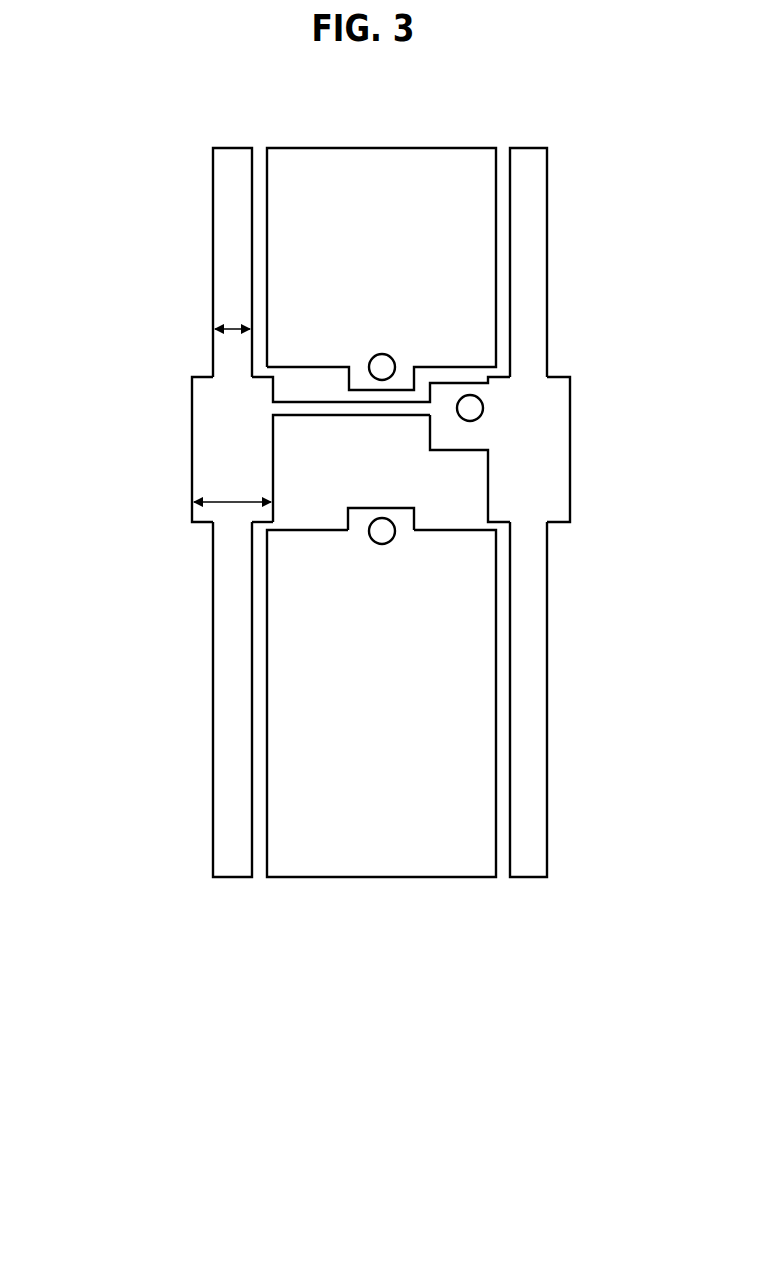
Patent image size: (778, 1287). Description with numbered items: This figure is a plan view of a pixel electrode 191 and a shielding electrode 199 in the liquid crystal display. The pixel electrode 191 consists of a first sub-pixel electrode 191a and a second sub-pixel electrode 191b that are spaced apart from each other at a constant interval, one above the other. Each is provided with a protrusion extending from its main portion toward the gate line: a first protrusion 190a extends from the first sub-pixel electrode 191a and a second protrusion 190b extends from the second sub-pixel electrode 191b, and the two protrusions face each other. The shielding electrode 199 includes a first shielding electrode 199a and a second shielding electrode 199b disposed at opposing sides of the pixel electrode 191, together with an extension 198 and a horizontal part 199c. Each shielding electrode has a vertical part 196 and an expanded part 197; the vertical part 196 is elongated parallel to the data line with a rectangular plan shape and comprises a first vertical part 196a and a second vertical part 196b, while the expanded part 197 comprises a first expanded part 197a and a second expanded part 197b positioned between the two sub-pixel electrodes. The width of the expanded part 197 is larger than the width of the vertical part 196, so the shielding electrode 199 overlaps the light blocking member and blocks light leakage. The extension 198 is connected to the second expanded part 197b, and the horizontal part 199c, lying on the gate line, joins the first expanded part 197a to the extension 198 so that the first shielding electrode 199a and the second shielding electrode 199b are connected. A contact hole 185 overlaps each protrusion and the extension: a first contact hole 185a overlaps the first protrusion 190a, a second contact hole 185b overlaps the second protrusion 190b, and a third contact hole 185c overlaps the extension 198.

The first sub-pixel electrode 191a is at (382, 148).
The second sub-pixel electrode 191b is at (382, 877).
The pixel electrode 191 is at (233, 1080).
The first vertical part 196a is at (213, 288).
The second vertical part 196b is at (548, 288).
The vertical part 196 is at (362, 1080).
The first expanded part 197a is at (192, 448).
The second expanded part 197b is at (570, 448).
The expanded part 197 is at (488, 1080).
The first shielding electrode 199a is at (232, 877).
The second shielding electrode 199b is at (530, 877).
The horizontal part 199c is at (315, 415).
The shielding electrode 199 is at (90, 1103).
The extension 198 is at (460, 450).
The first protrusion 190a is at (413, 380).
The second protrusion 190b is at (382, 508).
The first contact hole 185a is at (382, 354).
The second contact hole 185b is at (382, 545).
The third contact hole 185c is at (483, 408).
The contact hole 185 is at (625, 1092).